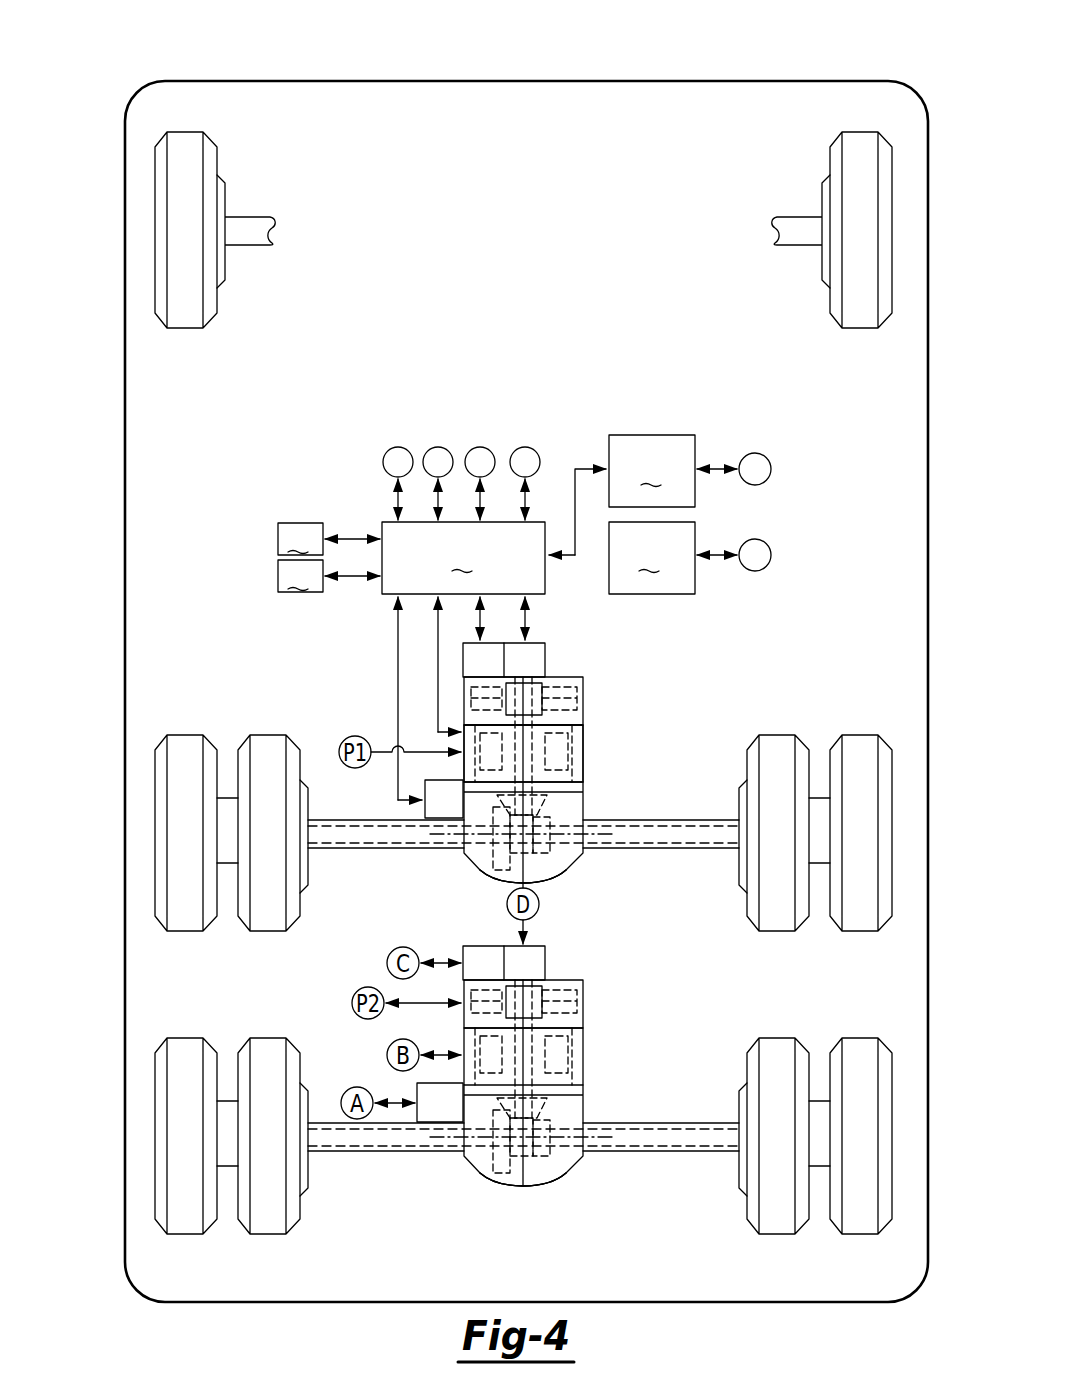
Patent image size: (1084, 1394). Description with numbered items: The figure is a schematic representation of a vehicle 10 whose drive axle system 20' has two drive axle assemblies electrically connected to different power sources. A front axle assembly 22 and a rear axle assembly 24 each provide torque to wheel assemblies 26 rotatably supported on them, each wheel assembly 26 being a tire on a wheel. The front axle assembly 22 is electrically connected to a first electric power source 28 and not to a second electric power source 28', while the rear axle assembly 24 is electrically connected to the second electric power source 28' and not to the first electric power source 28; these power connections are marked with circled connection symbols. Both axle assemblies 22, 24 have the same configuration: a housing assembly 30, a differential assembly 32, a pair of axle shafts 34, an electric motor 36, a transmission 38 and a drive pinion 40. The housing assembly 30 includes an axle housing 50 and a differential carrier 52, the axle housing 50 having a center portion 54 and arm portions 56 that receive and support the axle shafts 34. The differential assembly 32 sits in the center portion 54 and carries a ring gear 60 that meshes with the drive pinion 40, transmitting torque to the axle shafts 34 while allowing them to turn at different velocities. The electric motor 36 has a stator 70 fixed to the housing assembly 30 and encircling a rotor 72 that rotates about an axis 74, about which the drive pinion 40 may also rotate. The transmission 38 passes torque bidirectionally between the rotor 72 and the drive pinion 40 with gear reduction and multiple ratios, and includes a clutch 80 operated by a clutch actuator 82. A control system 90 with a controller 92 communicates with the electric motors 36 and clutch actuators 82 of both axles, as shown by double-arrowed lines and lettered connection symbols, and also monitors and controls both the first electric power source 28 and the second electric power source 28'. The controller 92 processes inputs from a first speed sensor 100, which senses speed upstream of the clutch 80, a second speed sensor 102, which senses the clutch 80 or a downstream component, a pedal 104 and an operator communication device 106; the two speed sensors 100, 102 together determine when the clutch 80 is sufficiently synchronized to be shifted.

The vehicle 10 is at (570, 76).
The drive axle system 20' is at (387, 678).
The front axle assembly 22 is at (136, 800).
The rear axle assembly 24 is at (136, 1178).
The wheel assembly 26 is at (190, 938).
The first electric power source 28 is at (652, 471).
The second electric power source 28' is at (652, 558).
The housing assembly 30 is at (540, 915).
The differential assembly 32 is at (549, 852).
The axle shafts 34 is at (334, 850).
The electric motor 36 is at (587, 723).
The transmission 38 is at (587, 683).
The drive pinion 40 is at (549, 800).
The axle housing 50 is at (500, 885).
The differential carrier 52 is at (585, 790).
The center portion 54 is at (523, 1028).
The arm portion 56 is at (357, 850).
The ring gear 60 is at (490, 856).
The stator 70 is at (573, 764).
The rotor 72 is at (575, 745).
The axis 74 is at (560, 856).
The clutch 80 is at (546, 683).
The clutch actuator 82 is at (536, 673).
The control system 90 is at (524, 586).
The controller 92 is at (463, 558).
The first speed sensor 100 is at (472, 673).
The second speed sensor 102 is at (433, 811).
The pedal 104 is at (300, 539).
The operator communication device 106 is at (300, 576).